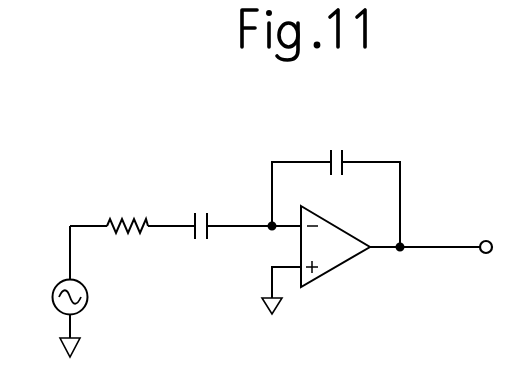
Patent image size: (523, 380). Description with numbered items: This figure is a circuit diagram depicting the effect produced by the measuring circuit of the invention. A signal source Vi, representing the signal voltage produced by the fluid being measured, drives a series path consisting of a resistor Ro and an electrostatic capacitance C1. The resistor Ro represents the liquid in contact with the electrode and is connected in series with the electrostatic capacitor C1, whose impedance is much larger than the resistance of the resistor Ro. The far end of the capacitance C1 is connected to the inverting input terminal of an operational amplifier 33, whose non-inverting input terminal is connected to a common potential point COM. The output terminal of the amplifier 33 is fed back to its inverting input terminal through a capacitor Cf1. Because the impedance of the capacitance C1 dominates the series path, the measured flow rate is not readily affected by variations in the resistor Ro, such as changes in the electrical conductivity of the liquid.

The operational amplifier 33 is at (340, 257).
The resistor Ro is at (127, 210).
The electrostatic capacitance C1 is at (213, 215).
The capacitor Cf1 is at (353, 151).
The input voltage source Vi is at (55, 291).
The common potential point COM is at (273, 307).